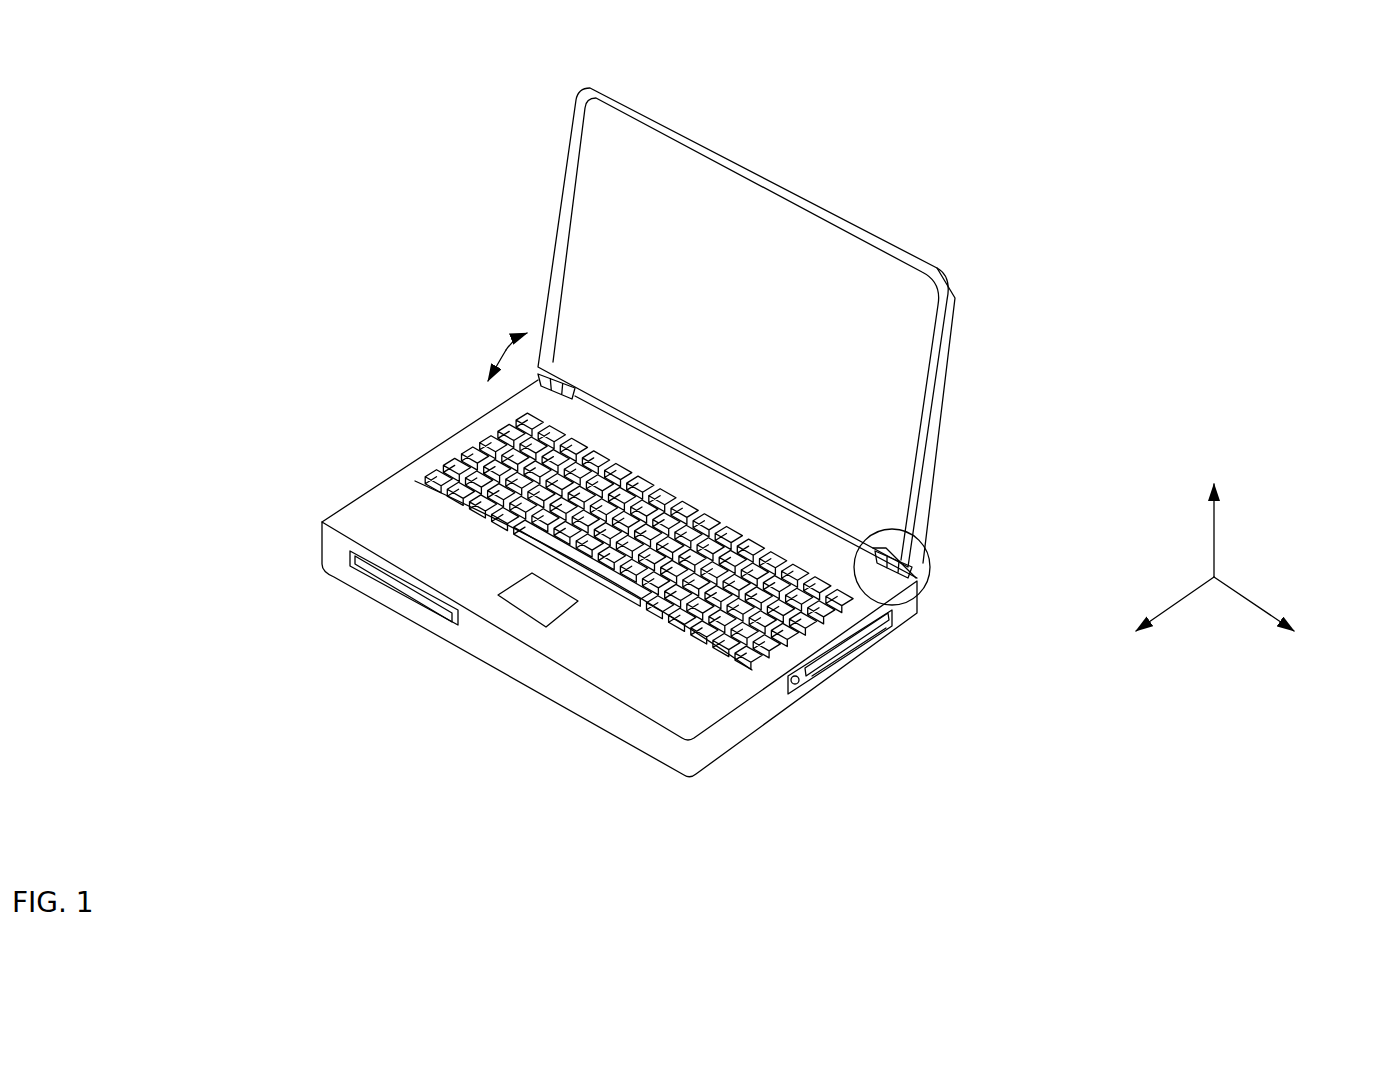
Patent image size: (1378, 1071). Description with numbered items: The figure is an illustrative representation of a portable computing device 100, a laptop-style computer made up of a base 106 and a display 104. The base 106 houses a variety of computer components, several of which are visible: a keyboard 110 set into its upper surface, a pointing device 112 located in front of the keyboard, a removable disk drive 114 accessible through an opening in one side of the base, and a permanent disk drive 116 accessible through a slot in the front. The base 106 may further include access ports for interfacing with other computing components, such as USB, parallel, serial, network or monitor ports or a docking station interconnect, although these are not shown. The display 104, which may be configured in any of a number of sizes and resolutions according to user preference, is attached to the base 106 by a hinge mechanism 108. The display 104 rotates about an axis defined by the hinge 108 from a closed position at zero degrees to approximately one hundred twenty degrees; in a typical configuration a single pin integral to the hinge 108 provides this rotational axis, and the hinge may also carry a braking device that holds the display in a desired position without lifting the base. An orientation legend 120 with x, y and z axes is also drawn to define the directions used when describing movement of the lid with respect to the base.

The portable computing device 100 is at (348, 90).
The display 104 is at (887, 240).
The base 106 is at (763, 729).
The hinge mechanism 108 is at (930, 578).
The keyboard 110 is at (457, 463).
The pointing device 112 is at (545, 627).
The removable disk drive 114 is at (875, 635).
The permanent disk drive 116 is at (407, 600).
The orientation legend 120 is at (1282, 538).